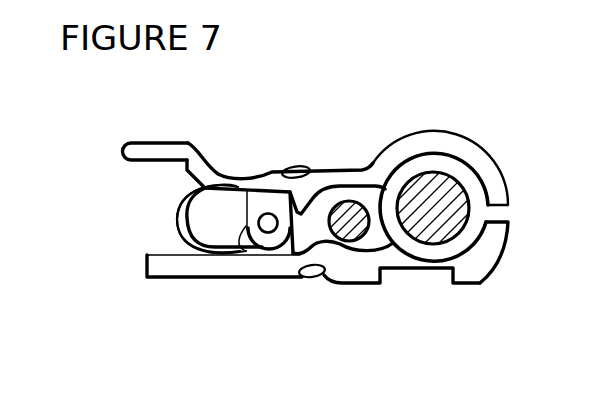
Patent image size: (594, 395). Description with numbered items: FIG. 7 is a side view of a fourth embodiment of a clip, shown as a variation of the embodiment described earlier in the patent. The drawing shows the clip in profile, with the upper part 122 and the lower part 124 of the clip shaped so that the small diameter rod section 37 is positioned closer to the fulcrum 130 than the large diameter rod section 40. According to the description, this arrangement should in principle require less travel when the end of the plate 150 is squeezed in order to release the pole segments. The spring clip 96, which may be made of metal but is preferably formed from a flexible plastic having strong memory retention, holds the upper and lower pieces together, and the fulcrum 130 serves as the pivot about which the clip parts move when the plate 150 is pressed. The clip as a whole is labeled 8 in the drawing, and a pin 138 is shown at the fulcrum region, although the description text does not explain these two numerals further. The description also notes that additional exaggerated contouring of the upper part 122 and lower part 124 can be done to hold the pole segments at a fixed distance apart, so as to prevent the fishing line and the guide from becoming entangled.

The clip body 8 is at (415, 267).
The small diameter rod section 37 is at (348, 200).
The large diameter rod section 40 is at (423, 192).
The spring clip 96 is at (291, 165).
The upper part of the clip 122 is at (482, 148).
The lower part of the clip 124 is at (493, 265).
The fulcrum 130 is at (248, 230).
The pivot pin 138 is at (287, 247).
The plate 150 is at (147, 152).